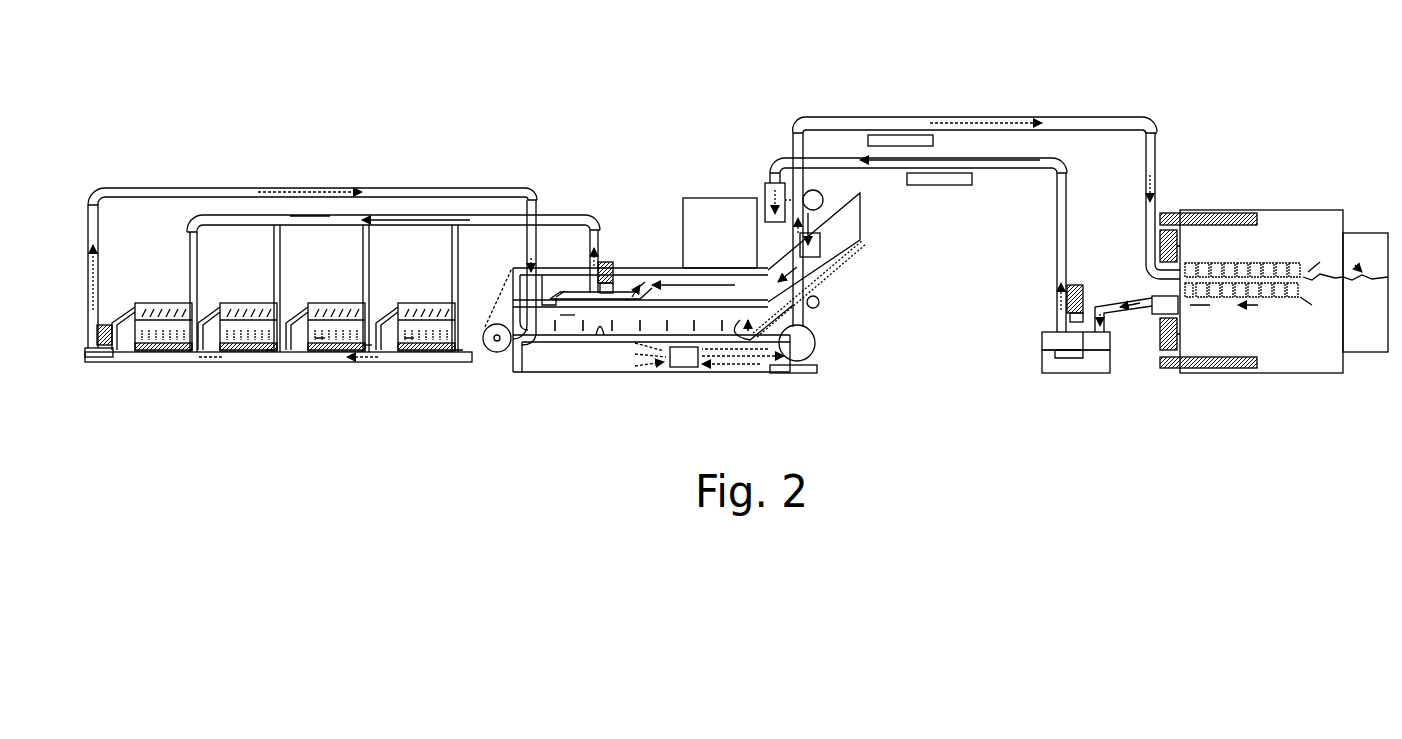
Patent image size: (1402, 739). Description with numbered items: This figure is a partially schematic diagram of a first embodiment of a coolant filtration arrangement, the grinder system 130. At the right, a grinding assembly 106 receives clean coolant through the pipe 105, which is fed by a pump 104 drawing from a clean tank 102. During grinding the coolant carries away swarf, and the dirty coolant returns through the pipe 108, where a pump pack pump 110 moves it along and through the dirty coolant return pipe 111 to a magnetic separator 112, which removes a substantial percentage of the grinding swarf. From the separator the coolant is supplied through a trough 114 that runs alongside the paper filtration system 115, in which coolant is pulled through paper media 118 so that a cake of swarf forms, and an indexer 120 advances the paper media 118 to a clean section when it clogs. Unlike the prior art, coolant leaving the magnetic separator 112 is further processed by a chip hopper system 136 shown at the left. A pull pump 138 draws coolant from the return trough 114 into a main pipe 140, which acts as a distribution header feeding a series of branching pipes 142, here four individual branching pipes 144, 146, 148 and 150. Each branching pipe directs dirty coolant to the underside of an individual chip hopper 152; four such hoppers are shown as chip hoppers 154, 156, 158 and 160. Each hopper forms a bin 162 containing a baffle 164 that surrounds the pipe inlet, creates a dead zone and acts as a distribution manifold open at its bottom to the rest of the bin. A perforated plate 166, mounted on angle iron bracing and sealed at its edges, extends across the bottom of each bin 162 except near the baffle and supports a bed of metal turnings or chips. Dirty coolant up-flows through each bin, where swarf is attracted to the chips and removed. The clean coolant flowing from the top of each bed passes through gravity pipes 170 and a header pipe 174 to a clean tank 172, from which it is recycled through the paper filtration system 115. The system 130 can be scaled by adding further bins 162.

The clean tank 102 is at (712, 368).
The pump 104 is at (818, 341).
The pipe 105 is at (1118, 117).
The grinding assembly 106 is at (1233, 178).
The pipe 108 is at (1134, 318).
The pump pack pump 110 is at (1079, 297).
The dirty coolant return pipe 111 is at (1056, 236).
The magnetic separator 112 is at (822, 200).
The trough 114 is at (647, 288).
The paper filtration system 115 is at (694, 144).
The paper media 118 is at (846, 265).
The indexer 120 is at (498, 354).
The grinder system 130 is at (1082, 80).
The chip hopper system 136 is at (514, 148).
The pull pump 138 is at (611, 236).
The main pipe 140 is at (348, 188).
The branching pipes 142 is at (304, 224).
The branching pipe 144 is at (458, 262).
The branching pipe 146 is at (370, 268).
The branching pipe 148 is at (282, 268).
The branching pipe 150 is at (196, 262).
The chip hopper 152 is at (290, 380).
The chip hopper 154 is at (423, 350).
The chip hopper 156 is at (335, 350).
The chip hopper 158 is at (246, 352).
The chip hopper 160 is at (152, 352).
The bin 162 is at (270, 352).
The baffle 164 is at (368, 348).
The perforated plate 166 is at (319, 340).
The gravity pipes 170 is at (128, 313).
The clean tank 172 is at (566, 322).
The header pipe 174 is at (414, 188).